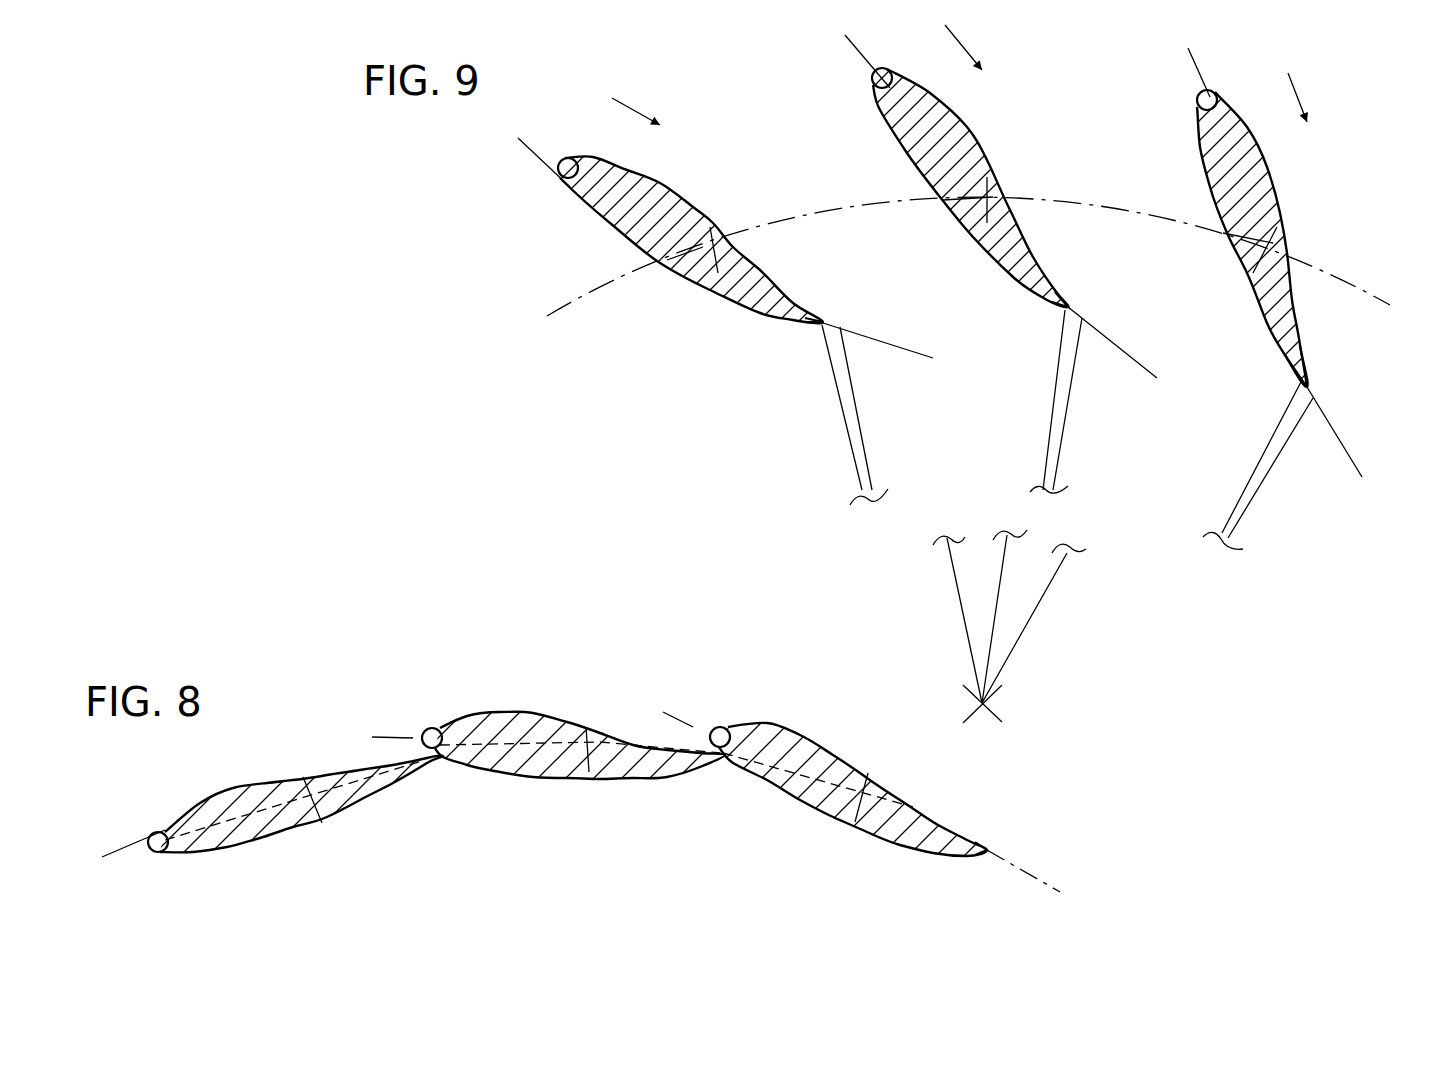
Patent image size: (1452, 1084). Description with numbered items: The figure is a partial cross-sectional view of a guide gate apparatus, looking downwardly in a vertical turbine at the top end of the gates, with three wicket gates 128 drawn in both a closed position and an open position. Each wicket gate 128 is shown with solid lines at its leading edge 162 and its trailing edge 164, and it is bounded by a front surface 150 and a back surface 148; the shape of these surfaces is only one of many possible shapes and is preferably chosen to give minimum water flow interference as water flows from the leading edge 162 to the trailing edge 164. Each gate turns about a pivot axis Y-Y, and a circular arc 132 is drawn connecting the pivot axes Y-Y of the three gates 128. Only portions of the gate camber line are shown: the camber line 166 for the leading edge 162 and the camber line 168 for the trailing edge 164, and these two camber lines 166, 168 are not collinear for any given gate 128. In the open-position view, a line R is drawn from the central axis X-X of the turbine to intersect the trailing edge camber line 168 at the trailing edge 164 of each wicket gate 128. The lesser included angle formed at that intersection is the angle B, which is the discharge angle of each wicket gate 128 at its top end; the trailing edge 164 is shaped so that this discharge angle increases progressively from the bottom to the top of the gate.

In FIG. 9, the wicket gate 128 is at (665, 192).
In FIG. 8, the wicket gate 128 is at (245, 787).
In FIG. 9, the circular arc 132 is at (1083, 202).
In FIG. 8, the circular arc 132 is at (1045, 870).
In FIG. 9, the back surface 148 is at (633, 163).
In FIG. 8, the back surface 148 is at (197, 793).
In FIG. 9, the front surface 150 is at (623, 242).
In FIG. 8, the front surface 150 is at (248, 853).
In FIG. 9, the leading edge 162 is at (568, 156).
In FIG. 8, the leading edge 162 is at (148, 834).
In FIG. 9, the trailing edge 164 is at (827, 310).
In FIG. 8, the trailing edge 164 is at (993, 840).
In FIG. 9, the camber line 166 is at (543, 157).
In FIG. 8, the camber line 166 is at (130, 851).
In FIG. 9, the camber line 168 is at (922, 352).
In FIG. 9, the line R is at (842, 413).
In FIG. 9, the angle B is at (907, 360).
In FIG. 9, the pivot axis Y-Y is at (711, 227).
In FIG. 8, the pivot axis Y-Y is at (303, 777).
In FIG. 9, the central axis X-X is at (1021, 705).